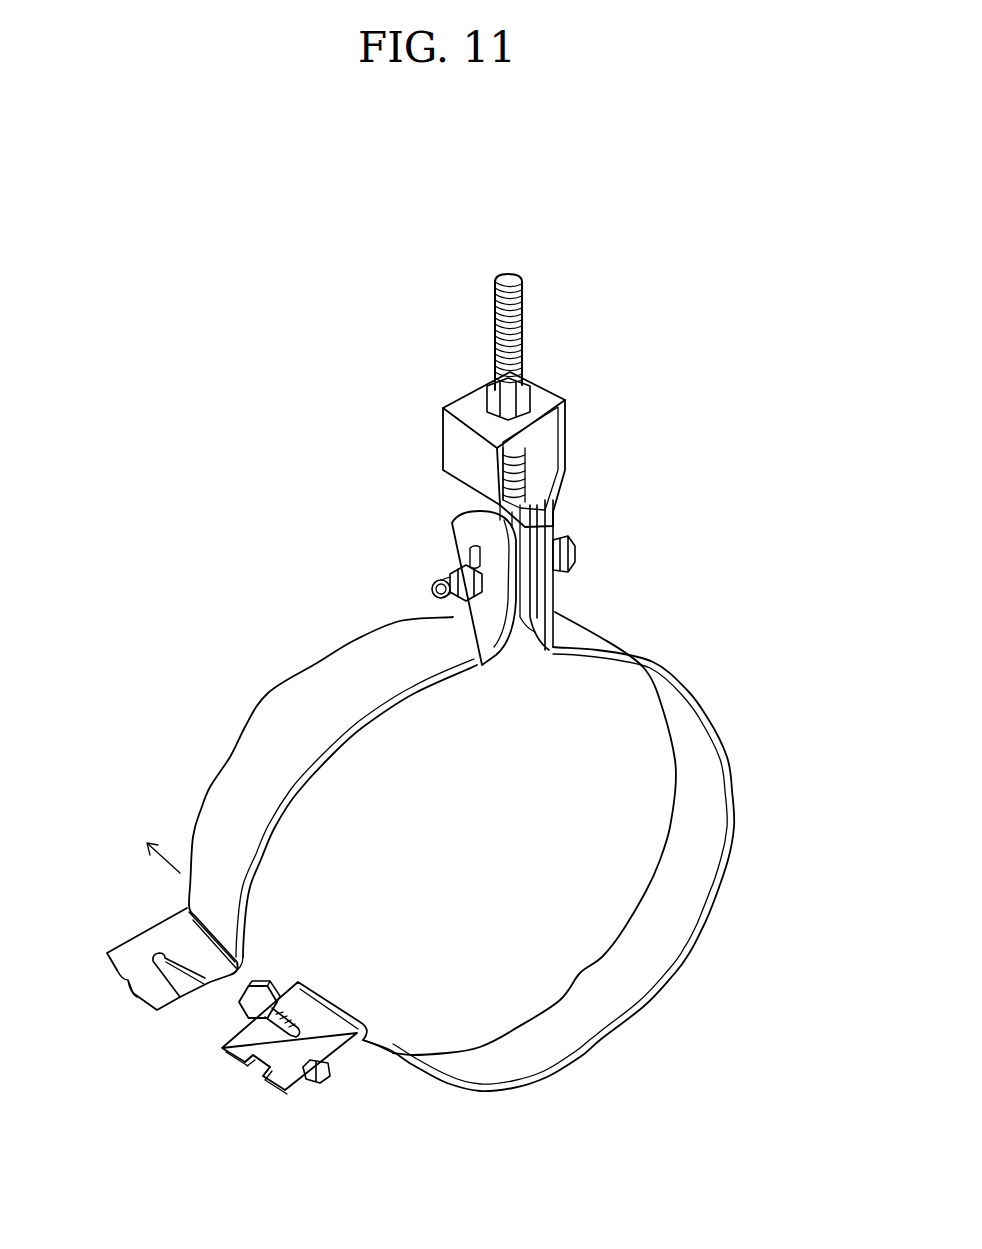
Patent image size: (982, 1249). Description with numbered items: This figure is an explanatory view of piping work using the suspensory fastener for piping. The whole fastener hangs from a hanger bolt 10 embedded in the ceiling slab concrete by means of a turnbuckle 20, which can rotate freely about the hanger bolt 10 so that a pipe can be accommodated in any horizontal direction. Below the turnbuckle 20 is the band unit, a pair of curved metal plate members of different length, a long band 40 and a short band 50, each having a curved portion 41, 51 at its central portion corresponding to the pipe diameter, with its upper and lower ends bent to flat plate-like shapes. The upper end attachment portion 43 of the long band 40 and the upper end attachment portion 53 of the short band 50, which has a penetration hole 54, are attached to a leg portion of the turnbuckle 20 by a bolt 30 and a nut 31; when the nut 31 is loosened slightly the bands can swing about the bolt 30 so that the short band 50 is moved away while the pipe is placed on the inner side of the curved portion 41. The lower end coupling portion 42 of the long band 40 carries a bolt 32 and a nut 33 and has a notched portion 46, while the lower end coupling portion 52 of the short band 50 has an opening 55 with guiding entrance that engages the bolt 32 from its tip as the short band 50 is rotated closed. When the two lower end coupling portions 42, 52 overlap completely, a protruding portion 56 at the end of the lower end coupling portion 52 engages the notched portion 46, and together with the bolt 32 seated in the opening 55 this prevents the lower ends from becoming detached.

The hanger bolt 10 is at (505, 330).
The turnbuckle 20 is at (547, 408).
The bolt 30 is at (572, 555).
The nut 31 is at (447, 573).
The bolt 32 is at (237, 1017).
The nut 33 is at (322, 1077).
The long band 40 is at (500, 845).
The curved portion 41 is at (733, 842).
The lower end coupling portion 42 is at (276, 1086).
The upper end attachment portion 43 is at (552, 630).
The notched portion 46 is at (257, 1067).
The short band 50 is at (268, 725).
The curved portion 51 is at (325, 683).
The lower end coupling portion 52 is at (131, 935).
The upper end attachment portion 53 is at (452, 552).
The penetration hole 54 is at (468, 552).
The opening with guiding entrance 55 is at (160, 950).
The protruding portion 56 is at (123, 992).